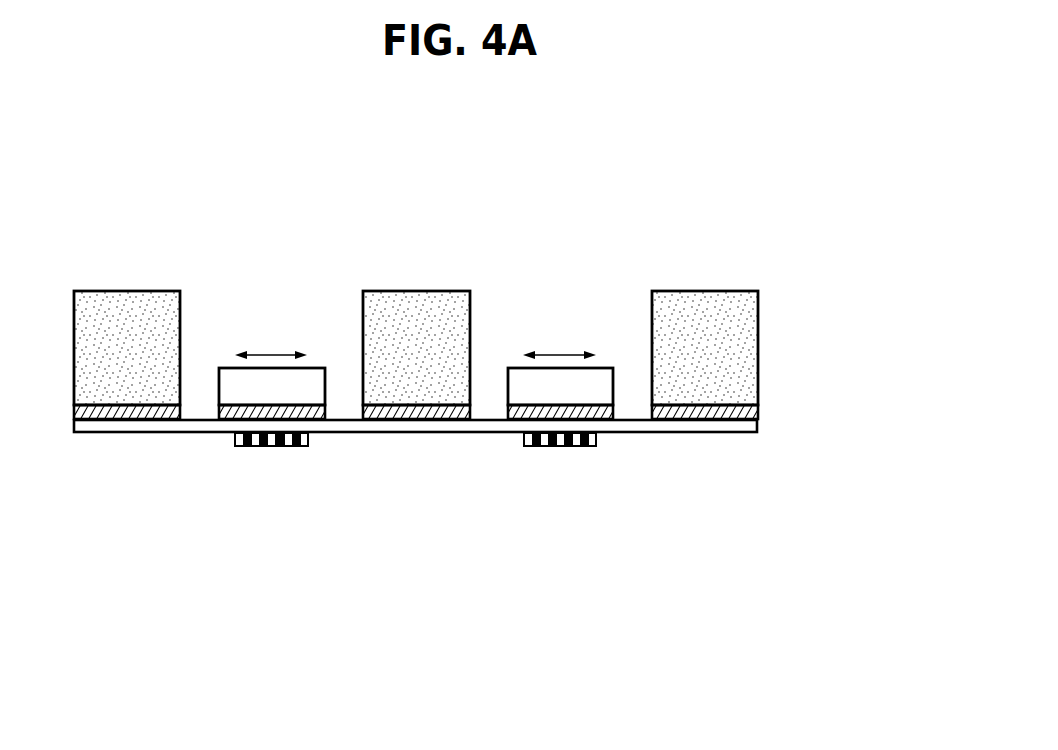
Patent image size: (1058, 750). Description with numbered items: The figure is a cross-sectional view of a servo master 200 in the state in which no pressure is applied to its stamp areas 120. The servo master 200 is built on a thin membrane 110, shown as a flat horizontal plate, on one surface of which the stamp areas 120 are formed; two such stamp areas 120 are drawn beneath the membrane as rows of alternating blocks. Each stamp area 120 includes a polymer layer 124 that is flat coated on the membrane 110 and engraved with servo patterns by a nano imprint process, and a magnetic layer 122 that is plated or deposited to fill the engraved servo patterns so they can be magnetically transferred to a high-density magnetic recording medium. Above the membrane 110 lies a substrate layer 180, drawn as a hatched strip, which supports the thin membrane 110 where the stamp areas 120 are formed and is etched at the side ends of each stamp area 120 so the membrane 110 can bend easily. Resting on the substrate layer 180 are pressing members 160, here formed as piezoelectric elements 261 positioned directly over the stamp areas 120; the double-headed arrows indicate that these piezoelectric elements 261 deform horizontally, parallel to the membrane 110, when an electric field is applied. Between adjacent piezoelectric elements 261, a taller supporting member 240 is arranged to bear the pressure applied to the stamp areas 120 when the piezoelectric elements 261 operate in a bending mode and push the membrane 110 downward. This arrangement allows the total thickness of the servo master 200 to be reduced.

The servo master 200 is at (786, 250).
The membrane 110 is at (753, 429).
The stamp areas 120 is at (397, 498).
The magnetic layer 122 is at (247, 446).
The polymer layer 124 is at (298, 513).
The pressing members 160 is at (541, 333).
The substrate layer 180 is at (757, 414).
The supporting member 240 is at (697, 300).
The piezoelectric elements 261 is at (583, 377).